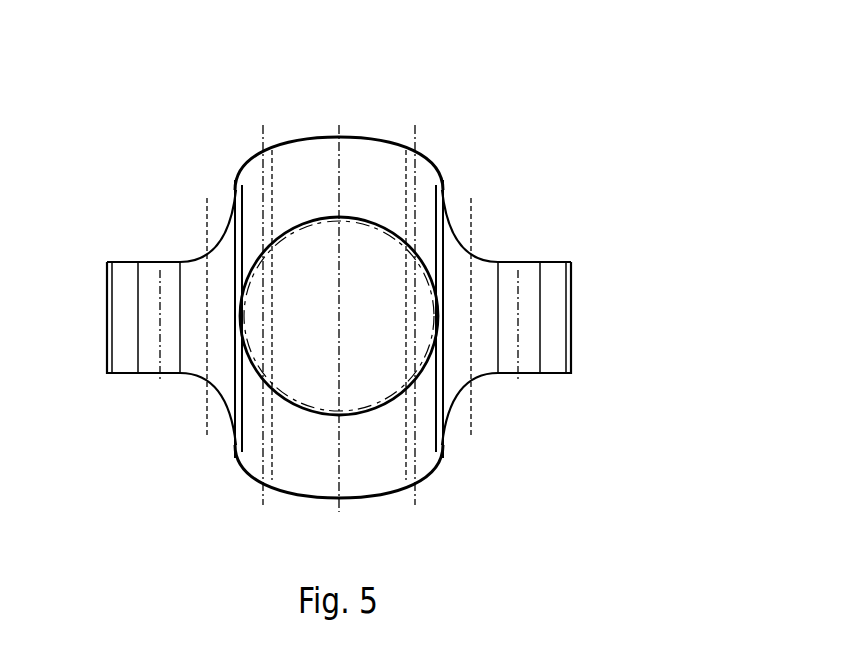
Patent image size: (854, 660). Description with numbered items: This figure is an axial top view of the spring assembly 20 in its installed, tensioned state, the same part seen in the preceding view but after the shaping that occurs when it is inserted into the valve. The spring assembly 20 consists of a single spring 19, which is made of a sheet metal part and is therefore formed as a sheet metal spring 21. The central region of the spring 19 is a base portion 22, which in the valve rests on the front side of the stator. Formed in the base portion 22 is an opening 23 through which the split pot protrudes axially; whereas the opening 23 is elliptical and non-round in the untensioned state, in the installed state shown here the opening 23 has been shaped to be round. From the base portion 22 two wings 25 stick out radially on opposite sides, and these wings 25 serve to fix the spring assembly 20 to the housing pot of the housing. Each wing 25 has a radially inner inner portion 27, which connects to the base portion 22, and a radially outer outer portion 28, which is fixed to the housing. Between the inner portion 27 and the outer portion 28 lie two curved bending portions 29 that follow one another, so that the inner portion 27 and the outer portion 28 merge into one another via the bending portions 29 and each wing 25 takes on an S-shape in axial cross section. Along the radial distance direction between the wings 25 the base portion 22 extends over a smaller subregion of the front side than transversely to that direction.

The spring 19 is at (398, 271).
The spring assembly 20 is at (398, 271).
The sheet metal spring 21 is at (398, 271).
The base portion 22 is at (360, 150).
The opening 23 is at (358, 335).
The wings 25 is at (134, 250).
The inner portion 27 is at (234, 440).
The outer portion 28 is at (107, 320).
The bending portion 29 is at (193, 362).